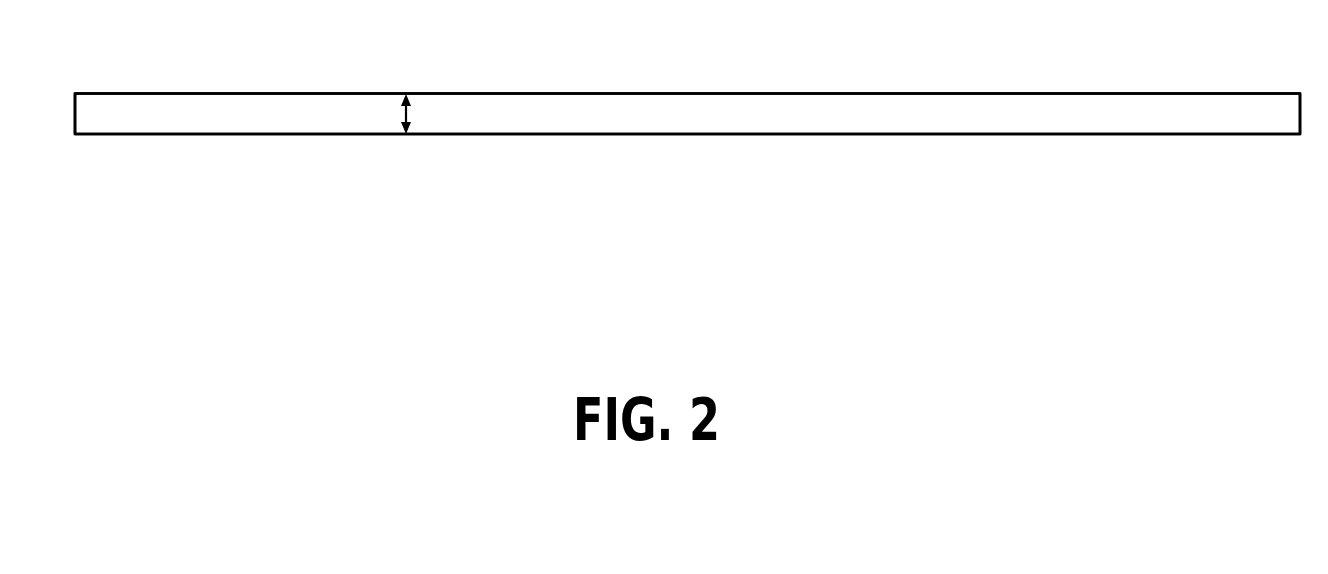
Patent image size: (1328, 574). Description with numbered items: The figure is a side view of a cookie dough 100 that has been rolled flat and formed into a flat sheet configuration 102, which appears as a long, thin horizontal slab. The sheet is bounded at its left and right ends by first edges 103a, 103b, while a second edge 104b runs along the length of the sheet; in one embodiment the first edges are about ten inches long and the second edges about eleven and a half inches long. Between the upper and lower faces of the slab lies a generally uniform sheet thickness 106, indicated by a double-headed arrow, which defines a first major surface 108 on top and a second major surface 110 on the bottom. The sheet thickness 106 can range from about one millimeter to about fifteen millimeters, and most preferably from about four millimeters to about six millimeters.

The cookie dough 100 is at (922, 113).
The flat sheet configuration 102 is at (236, 279).
The first edge 103a is at (75, 118).
The first edge 103b is at (1300, 113).
The second edge 104b is at (1005, 113).
The sheet thickness 106 is at (407, 115).
The first major surface 108 is at (703, 93).
The second major surface 110 is at (723, 135).